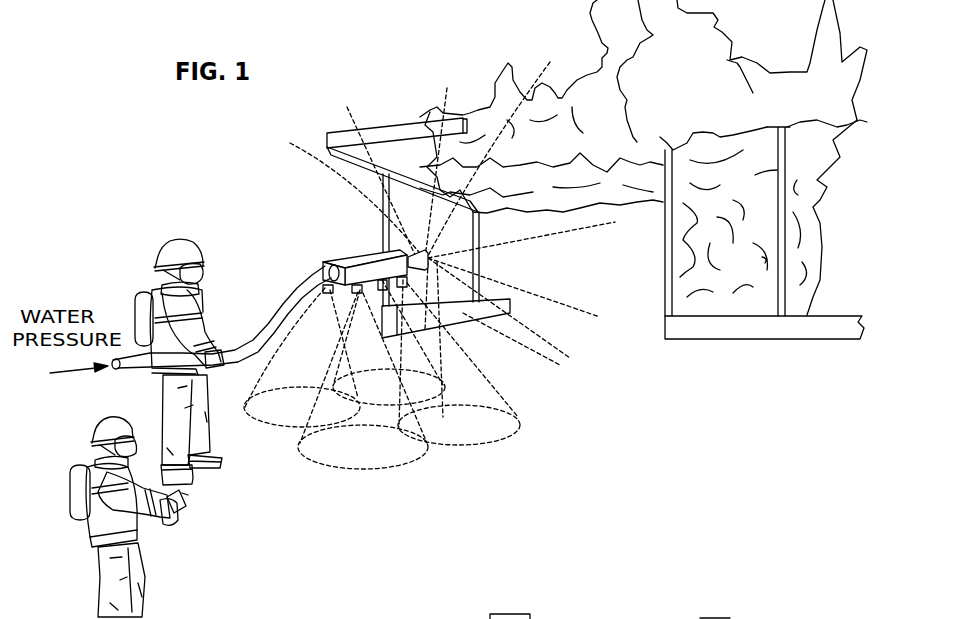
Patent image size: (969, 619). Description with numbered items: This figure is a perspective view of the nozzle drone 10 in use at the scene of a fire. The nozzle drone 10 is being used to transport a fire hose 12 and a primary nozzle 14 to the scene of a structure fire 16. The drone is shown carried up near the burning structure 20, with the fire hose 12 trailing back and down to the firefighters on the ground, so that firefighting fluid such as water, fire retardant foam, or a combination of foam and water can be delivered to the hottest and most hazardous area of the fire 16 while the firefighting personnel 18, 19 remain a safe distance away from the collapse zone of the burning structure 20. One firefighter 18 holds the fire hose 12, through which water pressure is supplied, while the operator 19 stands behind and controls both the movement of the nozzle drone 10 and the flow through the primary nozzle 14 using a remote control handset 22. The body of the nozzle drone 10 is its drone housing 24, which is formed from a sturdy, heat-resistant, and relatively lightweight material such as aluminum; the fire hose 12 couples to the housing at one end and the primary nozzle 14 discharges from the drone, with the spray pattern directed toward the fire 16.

The nozzle drone 10 is at (345, 248).
The fire hose 12 is at (266, 330).
The primary nozzle 14 is at (427, 252).
The structure fire 16 is at (582, 43).
The firefighting personnel 18 is at (158, 287).
The operator 19 is at (93, 463).
The burning structure 20 is at (715, 615).
The remote control handset 22 is at (183, 510).
The drone housing 24 is at (634, 618).